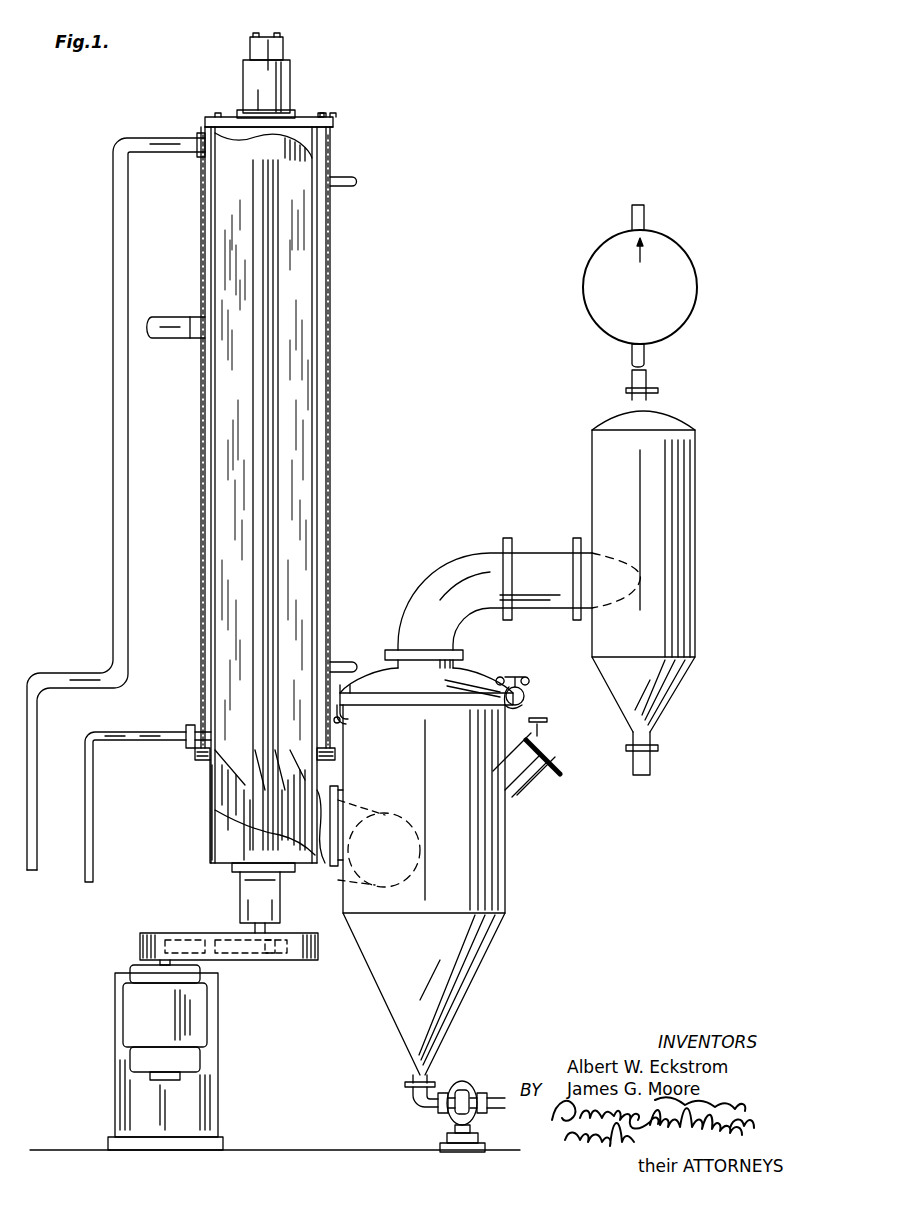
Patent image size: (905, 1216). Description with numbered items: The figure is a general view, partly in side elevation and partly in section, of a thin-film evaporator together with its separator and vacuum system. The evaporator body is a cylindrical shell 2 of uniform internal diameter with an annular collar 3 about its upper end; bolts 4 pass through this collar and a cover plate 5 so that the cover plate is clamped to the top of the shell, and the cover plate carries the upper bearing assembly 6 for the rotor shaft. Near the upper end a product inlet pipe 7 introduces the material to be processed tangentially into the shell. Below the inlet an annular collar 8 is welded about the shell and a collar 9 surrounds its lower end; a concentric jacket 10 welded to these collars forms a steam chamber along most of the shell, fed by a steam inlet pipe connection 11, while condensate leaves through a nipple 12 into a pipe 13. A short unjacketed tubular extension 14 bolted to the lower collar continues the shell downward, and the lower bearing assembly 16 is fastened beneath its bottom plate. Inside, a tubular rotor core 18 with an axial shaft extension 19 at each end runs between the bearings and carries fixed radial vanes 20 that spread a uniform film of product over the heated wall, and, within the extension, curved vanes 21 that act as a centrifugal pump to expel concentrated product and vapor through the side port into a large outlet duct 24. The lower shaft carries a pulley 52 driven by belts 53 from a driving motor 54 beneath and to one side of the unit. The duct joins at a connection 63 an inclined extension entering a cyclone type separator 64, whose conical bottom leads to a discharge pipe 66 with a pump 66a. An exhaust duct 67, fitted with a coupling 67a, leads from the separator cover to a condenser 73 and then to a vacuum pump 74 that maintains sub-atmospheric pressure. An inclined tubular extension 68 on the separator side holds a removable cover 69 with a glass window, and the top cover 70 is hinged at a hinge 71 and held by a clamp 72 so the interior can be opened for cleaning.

The shell 2 is at (320, 276).
The annular collar 3 is at (331, 128).
The bolts 4 is at (326, 116).
The cover plate 5 is at (335, 120).
The upper bearing assembly 6 is at (245, 77).
The product inlet pipe 7 is at (168, 140).
The annular collar 8 is at (334, 164).
The collar 9 is at (195, 752).
The jacket 10 is at (332, 326).
The steam inlet pipe connection 11 is at (178, 314).
The nipple 12 is at (193, 724).
The pipe 13 is at (146, 730).
The tubular extension 14 is at (210, 790).
The lower bearing assembly 16 is at (238, 890).
The tubular rotor core 18 is at (278, 468).
The shaft extension 19 is at (229, 933).
The vanes 20 is at (222, 456).
The curved vanes 21 is at (236, 800).
The outlet duct 24 is at (333, 868).
The pulley 52 is at (288, 962).
The belts 53 is at (240, 962).
The driving motor 54 is at (130, 1018).
The connection 63 is at (336, 872).
The cyclone type separator 64 is at (506, 876).
The discharge pipe 66 is at (430, 1102).
The pump 66a is at (464, 1088).
The exhaust duct 67 is at (465, 660).
The coupling 67a is at (428, 580).
The inclined tubular extension 68 is at (537, 795).
The removable cover 69 is at (565, 750).
The cover 70 is at (498, 680).
The hinge 71 is at (346, 715).
The clamp 72 is at (528, 698).
The condenser 73 is at (680, 514).
The vacuum pump 74 is at (698, 280).